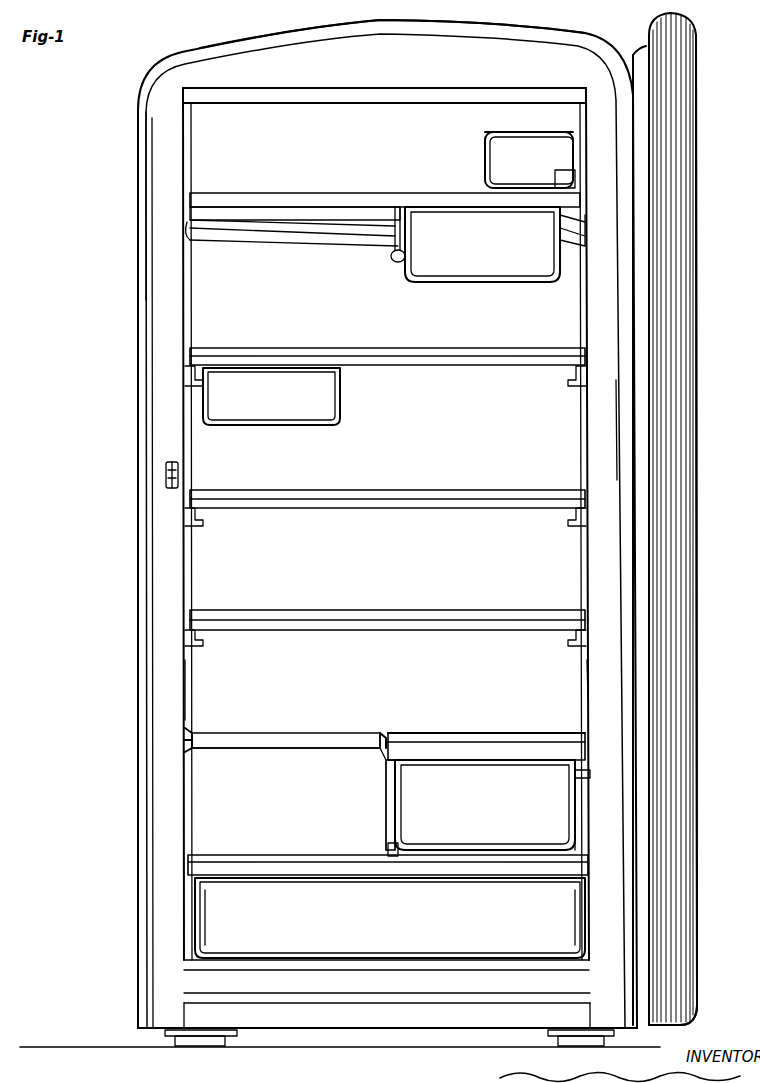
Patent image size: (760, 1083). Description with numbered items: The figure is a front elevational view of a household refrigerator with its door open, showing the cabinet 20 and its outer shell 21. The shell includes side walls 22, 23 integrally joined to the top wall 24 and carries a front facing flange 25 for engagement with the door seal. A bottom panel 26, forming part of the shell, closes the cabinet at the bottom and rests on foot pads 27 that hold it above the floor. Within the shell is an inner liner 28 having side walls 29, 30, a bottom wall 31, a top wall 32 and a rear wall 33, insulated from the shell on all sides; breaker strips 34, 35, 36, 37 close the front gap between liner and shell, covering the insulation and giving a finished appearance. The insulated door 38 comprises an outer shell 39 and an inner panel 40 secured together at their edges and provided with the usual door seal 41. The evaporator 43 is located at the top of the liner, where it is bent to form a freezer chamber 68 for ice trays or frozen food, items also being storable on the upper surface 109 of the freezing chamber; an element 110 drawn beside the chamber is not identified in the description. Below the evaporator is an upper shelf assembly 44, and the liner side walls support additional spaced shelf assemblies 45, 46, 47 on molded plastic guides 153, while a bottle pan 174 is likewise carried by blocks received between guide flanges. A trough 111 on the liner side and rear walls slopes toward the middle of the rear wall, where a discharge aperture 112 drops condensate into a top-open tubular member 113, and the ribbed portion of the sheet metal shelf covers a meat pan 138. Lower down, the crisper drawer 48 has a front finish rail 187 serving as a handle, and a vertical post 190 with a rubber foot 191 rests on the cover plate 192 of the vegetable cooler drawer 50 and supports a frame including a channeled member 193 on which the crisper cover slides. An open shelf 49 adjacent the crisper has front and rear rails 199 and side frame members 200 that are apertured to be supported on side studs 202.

The cabinet 20 is at (359, 524).
The outer shell 21 is at (365, 524).
The side wall 22 is at (140, 390).
The side wall 23 is at (674, 524).
The top wall 24 is at (388, 20).
The front facing flange 25 is at (136, 730).
The bottom panel 26 is at (366, 1047).
The foot pads 27 is at (196, 1040).
The inner liner 28 is at (192, 566).
The side wall of liner 29 is at (190, 690).
The side wall of liner 30 is at (600, 688).
The bottom wall of liner 31 is at (388, 962).
The top wall of liner 32 is at (387, 80).
The rear wall of liner 33 is at (432, 432).
The breaker strip 34 is at (150, 306).
The breaker strip 35 is at (302, 78).
The breaker strip 36 is at (594, 428).
The breaker strip 37 is at (340, 985).
The insulated door 38 is at (684, 436).
The outer shell of door 39 is at (698, 496).
The inner panel of door 40 is at (640, 50).
The door seal 41 is at (690, 1028).
The evaporator 43 is at (436, 124).
The upper shelf assembly 44 is at (388, 237).
The shelf assembly 45 is at (400, 350).
The shelf assembly 46 is at (400, 492).
The shelf assembly 47 is at (392, 612).
The crisper drawer 48 is at (464, 781).
The open shelf 49 is at (260, 779).
The vegetable cooler drawer 50 is at (388, 853).
The freezer chamber 68 is at (552, 149).
The upper surface of freezing chamber 109 is at (560, 118).
The bracket 110 is at (560, 147).
The trough 111 is at (250, 246).
The discharge aperture 112 is at (388, 248).
The tubular member 113 is at (374, 262).
The meat pan 138 is at (505, 270).
The molded plastic guides 153 is at (204, 381).
The bottle pan 174 is at (246, 420).
The front finish rail 187 is at (408, 736).
The vertical post 190 is at (388, 795).
The rubber foot 191 is at (390, 848).
The cover plate 192 is at (290, 862).
The channeled member 193 is at (380, 752).
The front and rear rails 199 is at (212, 746).
The side frame members 200 is at (194, 733).
The side studs 202 is at (186, 742).